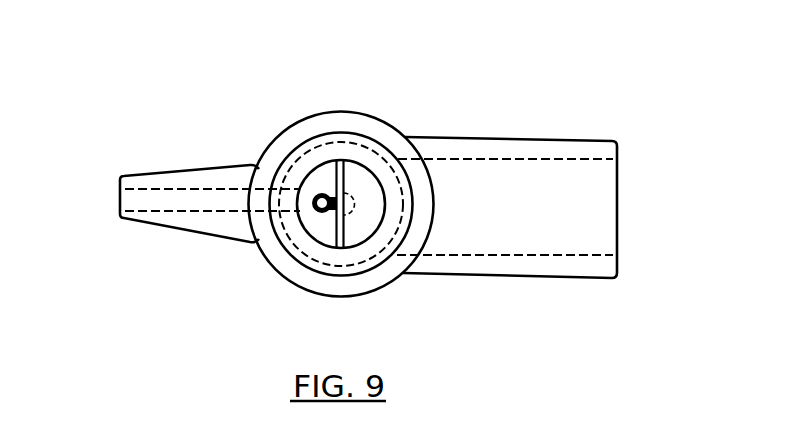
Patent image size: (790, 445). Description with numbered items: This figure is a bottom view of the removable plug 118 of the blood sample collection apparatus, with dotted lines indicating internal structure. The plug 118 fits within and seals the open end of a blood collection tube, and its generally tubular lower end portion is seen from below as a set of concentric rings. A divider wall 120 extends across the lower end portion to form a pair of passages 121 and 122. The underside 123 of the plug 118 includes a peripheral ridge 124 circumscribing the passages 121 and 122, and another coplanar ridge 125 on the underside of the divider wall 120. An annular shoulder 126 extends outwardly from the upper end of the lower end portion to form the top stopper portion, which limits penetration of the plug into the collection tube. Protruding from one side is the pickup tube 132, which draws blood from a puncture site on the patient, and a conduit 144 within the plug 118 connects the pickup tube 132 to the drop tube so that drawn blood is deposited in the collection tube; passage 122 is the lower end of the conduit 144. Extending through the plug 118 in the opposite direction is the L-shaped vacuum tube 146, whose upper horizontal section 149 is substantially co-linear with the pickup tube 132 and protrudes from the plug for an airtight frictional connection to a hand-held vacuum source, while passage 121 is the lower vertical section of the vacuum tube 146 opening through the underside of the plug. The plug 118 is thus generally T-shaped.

The removable plug 118 is at (361, 112).
The divider wall 120 is at (338, 246).
The passage 121 is at (366, 229).
The passage 122 is at (316, 229).
The underside 123 is at (372, 152).
The peripheral ridge 124 is at (310, 153).
The coplanar ridge 125 is at (338, 160).
The annular shoulder 126 is at (281, 146).
The pickup tube 132 is at (173, 175).
The conduit 144 is at (312, 196).
The vacuum tube 146 is at (617, 215).
The upper horizontal section 149 is at (552, 137).